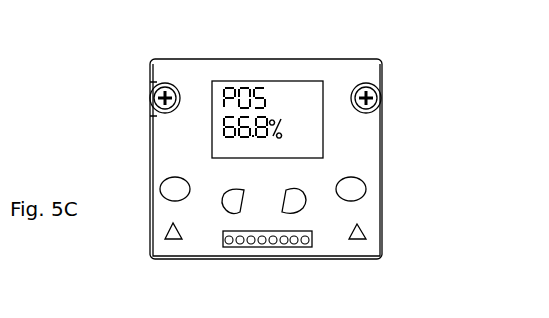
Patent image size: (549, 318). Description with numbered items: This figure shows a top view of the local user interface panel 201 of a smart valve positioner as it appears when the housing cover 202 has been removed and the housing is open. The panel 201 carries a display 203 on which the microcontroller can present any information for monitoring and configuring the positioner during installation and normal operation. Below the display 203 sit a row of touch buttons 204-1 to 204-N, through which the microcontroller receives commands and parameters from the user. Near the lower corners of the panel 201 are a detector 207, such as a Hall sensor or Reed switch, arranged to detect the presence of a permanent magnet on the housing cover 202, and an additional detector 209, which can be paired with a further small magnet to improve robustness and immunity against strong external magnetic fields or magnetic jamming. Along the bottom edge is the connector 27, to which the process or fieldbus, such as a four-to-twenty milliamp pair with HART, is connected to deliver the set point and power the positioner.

The local user interface panel 201 is at (206, 52).
The housing cover 202 is at (156, 58).
The display 203 is at (296, 119).
The touch button 204-1 is at (163, 181).
The touch button 204-N is at (362, 189).
The detector 207 is at (167, 233).
The detector 209 is at (362, 234).
The connector 27 is at (265, 244).